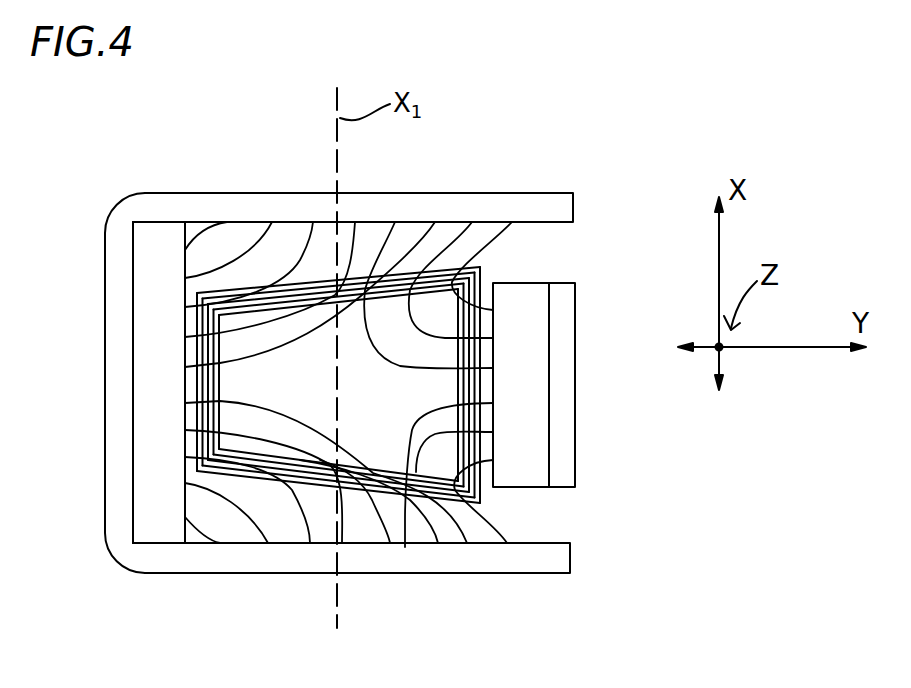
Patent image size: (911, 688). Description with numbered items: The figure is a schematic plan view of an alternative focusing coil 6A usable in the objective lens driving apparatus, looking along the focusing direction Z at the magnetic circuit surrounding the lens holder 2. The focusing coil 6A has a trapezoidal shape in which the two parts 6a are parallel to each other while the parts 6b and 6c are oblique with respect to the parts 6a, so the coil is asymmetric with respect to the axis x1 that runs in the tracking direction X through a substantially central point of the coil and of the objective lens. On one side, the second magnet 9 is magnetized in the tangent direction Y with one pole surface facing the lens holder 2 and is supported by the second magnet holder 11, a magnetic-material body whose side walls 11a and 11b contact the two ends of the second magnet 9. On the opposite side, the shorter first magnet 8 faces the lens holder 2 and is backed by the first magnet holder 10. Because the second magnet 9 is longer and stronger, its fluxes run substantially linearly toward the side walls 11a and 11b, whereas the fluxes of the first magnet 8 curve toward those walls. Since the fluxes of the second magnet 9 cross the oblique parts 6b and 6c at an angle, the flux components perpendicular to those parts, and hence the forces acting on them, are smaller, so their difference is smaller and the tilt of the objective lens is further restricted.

The lens holder 2 is at (303, 377).
The focusing coil 6A is at (356, 395).
The parts of the focusing coil 6a is at (220, 390).
The part of the focusing coil 6b is at (363, 272).
The part of the focusing coil 6c is at (405, 547).
The first magnet 8 is at (527, 297).
The second magnet 9 is at (153, 338).
The first magnet holder 10 is at (565, 432).
The second magnet holder 11 is at (326, 383).
The side wall of the second magnet holder 11a is at (307, 208).
The side wall of the second magnet holder 11b is at (490, 565).